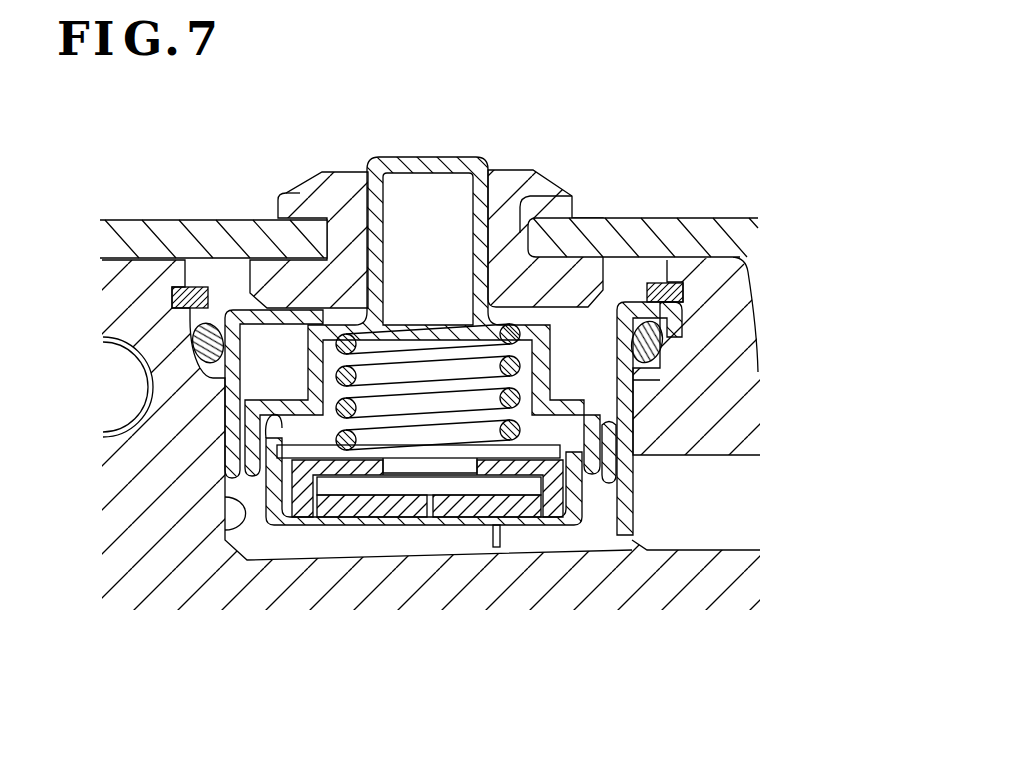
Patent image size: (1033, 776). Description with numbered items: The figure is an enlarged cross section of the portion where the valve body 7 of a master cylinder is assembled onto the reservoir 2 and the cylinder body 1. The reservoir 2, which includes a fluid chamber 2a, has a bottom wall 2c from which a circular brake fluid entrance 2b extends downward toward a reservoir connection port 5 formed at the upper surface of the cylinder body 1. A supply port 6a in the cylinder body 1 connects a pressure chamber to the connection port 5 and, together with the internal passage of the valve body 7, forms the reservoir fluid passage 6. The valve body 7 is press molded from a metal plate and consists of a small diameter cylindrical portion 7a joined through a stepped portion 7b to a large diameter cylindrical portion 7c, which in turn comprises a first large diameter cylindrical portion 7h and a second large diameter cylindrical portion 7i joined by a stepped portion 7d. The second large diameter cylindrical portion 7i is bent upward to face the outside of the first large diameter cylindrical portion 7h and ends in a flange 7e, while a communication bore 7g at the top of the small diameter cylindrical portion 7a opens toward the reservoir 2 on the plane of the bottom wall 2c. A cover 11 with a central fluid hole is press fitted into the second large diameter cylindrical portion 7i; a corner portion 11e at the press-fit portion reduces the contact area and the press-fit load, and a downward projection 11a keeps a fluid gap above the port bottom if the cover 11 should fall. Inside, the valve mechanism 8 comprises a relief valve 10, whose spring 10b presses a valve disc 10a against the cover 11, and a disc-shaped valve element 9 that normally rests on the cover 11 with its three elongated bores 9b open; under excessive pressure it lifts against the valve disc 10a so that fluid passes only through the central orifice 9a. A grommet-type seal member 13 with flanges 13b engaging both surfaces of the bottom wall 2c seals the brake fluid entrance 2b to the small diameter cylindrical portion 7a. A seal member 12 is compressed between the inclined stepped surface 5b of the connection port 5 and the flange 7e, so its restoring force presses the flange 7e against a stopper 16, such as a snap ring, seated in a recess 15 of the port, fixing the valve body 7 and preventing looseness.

The cylinder body 1 is at (130, 292).
The reservoir 2 is at (90, 247).
The fluid chamber 2a is at (582, 168).
The brake fluid entrance 2b is at (577, 193).
The bottom wall 2c is at (688, 235).
The reservoir connection port 5 is at (220, 483).
The stepped surface 5b is at (150, 436).
The reservoir fluid passage 6 is at (740, 534).
The supply port 6a is at (742, 501).
The valve body 7 is at (401, 144).
The small diameter cylindrical portion 7a is at (375, 182).
The stepped portion 7b is at (323, 172).
The large diameter cylindrical portion 7c is at (830, 332).
The stepped portion 7d is at (220, 482).
The flange 7e is at (224, 310).
The communication bore 7g is at (448, 158).
The first large diameter cylindrical portion 7h is at (622, 366).
The second large diameter cylindrical portion 7i is at (622, 445).
The valve mechanism 8 is at (408, 528).
The valve element 9 is at (362, 535).
The orifice 9a is at (391, 536).
The elongated bores 9b is at (340, 506).
The relief valve 10 is at (465, 611).
The valve disc 10a is at (502, 520).
The spring 10b is at (563, 522).
The cover 11 is at (278, 533).
The projection 11a is at (490, 542).
The corner portion 11e is at (600, 483).
The seal member 12 is at (192, 345).
The seal member 13 is at (516, 157).
The flanges 13b is at (262, 298).
The recess 15 is at (683, 287).
The stopper 16 is at (172, 294).